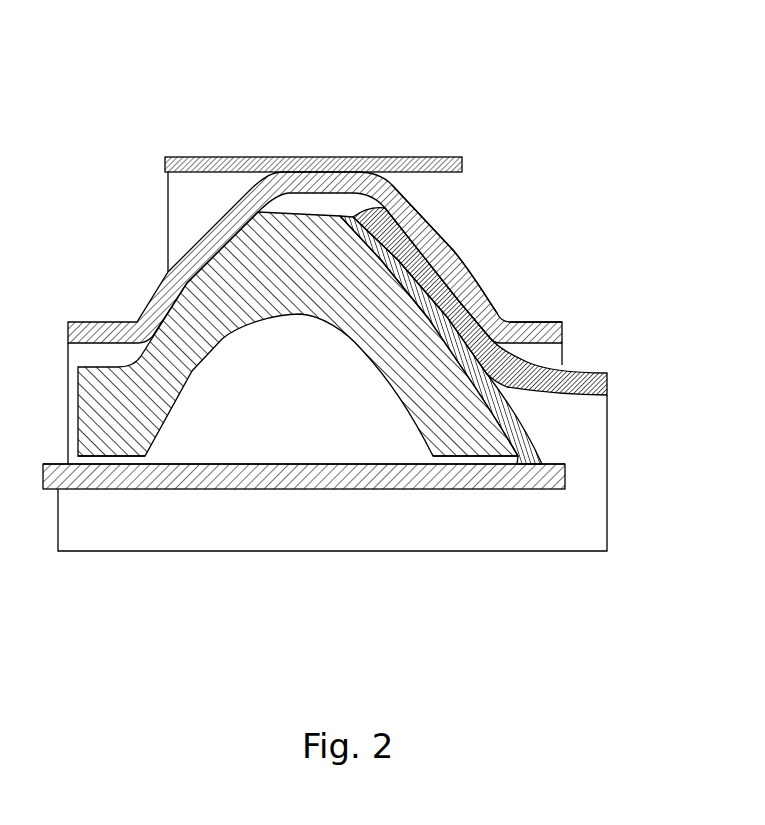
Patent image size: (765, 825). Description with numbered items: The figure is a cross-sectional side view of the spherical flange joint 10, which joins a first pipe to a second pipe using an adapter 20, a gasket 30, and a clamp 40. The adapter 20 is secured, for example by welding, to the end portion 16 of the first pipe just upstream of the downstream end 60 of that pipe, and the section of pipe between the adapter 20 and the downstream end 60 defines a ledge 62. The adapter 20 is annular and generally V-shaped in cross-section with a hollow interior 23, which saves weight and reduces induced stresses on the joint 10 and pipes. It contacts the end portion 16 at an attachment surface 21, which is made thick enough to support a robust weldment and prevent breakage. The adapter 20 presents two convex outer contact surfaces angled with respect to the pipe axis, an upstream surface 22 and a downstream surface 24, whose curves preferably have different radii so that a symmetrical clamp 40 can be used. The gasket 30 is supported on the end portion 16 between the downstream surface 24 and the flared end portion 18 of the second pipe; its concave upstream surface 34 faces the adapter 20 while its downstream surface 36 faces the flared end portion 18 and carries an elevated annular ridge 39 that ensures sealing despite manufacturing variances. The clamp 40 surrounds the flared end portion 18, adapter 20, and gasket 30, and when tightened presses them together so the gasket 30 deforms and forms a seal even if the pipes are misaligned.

The spherical flange joint 10 is at (442, 110).
The end portion 16 is at (350, 480).
The flared end portion 18 is at (533, 322).
The adapter 20 is at (152, 326).
The attachment surface 21 is at (120, 457).
The upstream surface 22 is at (167, 273).
The hollow interior 23 is at (301, 415).
The downstream surface 24 is at (450, 245).
The gasket 30 is at (447, 307).
The upstream surface 34 is at (436, 346).
The downstream surface 36 is at (513, 405).
The elevated annular ridge 39 is at (440, 322).
The clamp 40 is at (236, 148).
The downstream end 60 is at (565, 476).
The ledge 62 is at (558, 463).